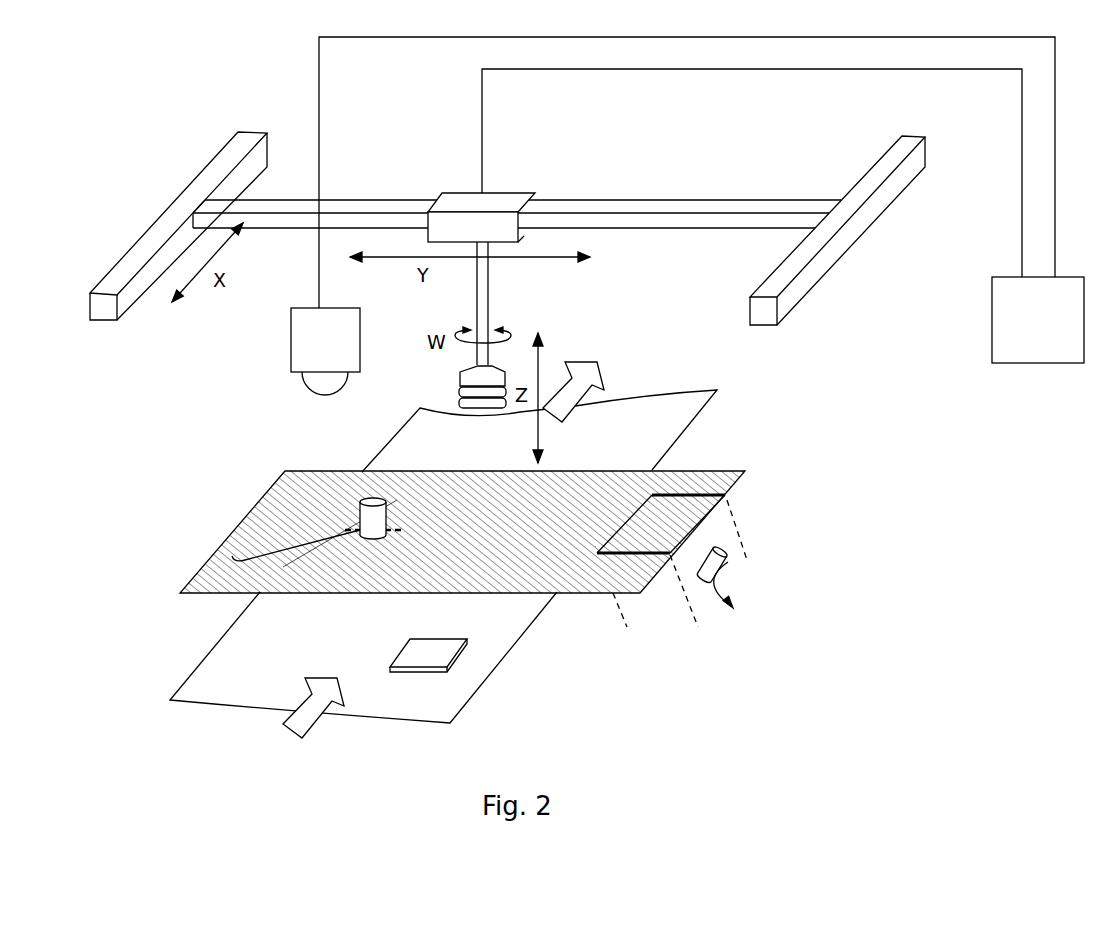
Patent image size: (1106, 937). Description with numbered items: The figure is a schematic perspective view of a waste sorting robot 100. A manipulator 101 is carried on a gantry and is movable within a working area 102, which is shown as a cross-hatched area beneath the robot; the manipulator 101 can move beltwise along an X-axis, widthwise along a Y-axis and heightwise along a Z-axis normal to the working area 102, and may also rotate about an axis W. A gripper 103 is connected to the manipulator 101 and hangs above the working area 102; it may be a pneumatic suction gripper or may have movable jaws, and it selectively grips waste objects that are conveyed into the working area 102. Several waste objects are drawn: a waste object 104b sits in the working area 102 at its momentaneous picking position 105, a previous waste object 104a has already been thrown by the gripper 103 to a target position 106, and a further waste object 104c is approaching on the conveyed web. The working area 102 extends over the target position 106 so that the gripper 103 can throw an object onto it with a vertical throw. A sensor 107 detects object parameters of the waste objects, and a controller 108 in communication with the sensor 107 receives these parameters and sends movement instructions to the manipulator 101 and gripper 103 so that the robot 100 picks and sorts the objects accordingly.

The waste sorting robot 100 is at (242, 95).
The manipulator 101 is at (508, 193).
The working area 102 is at (373, 590).
The gripper 103 is at (460, 378).
The waste object 104a is at (722, 548).
The waste object 104b is at (370, 499).
The waste object 104c is at (445, 657).
The picking position 105 is at (232, 556).
The target position 106 is at (682, 498).
The sensor 107 is at (315, 342).
The controller 108 is at (1038, 320).